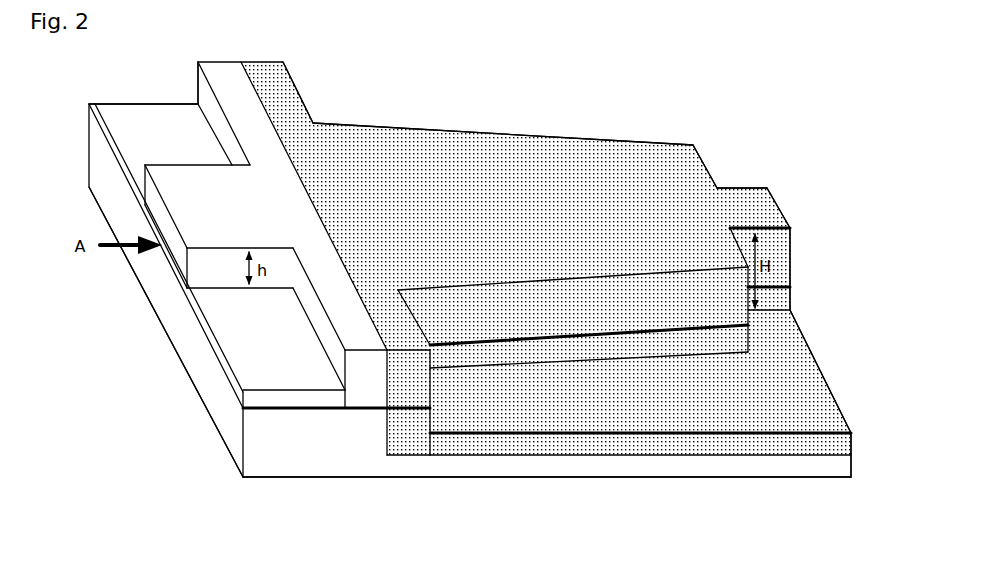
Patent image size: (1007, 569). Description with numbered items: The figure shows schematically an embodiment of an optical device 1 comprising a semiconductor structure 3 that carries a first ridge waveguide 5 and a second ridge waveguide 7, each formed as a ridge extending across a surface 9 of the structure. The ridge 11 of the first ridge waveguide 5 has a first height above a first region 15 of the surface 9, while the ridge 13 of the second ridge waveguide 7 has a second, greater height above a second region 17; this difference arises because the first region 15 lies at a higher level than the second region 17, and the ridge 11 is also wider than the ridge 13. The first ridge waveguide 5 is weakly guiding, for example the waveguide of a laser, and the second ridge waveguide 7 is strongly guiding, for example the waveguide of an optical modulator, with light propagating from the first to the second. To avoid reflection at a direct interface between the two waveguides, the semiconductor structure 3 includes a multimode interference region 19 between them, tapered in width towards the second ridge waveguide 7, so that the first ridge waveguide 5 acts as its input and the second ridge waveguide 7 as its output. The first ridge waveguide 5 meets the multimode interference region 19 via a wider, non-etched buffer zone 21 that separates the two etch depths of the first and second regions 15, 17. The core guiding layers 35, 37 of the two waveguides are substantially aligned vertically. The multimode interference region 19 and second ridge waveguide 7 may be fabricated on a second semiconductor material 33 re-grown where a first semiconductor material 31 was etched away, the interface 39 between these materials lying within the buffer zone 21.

The optical device 1 is at (570, 118).
The semiconductor structure 3 is at (215, 378).
The first ridge waveguide 5 is at (178, 197).
The second ridge waveguide 7 is at (748, 197).
The surface 9 is at (146, 121).
The ridge 11 is at (213, 267).
The ridge 13 is at (780, 243).
The first region 15 is at (228, 318).
The second region 17 is at (810, 405).
The multimode interference region 19 is at (612, 165).
The buffer zone 21 is at (283, 93).
The first semiconductor material 31 is at (365, 433).
The second semiconductor material 33 is at (405, 435).
The core guiding layer 35 is at (315, 408).
The core guiding layer 37 is at (405, 413).
The interface 39 is at (387, 440).